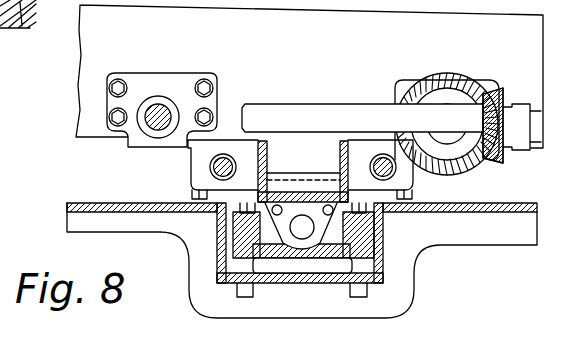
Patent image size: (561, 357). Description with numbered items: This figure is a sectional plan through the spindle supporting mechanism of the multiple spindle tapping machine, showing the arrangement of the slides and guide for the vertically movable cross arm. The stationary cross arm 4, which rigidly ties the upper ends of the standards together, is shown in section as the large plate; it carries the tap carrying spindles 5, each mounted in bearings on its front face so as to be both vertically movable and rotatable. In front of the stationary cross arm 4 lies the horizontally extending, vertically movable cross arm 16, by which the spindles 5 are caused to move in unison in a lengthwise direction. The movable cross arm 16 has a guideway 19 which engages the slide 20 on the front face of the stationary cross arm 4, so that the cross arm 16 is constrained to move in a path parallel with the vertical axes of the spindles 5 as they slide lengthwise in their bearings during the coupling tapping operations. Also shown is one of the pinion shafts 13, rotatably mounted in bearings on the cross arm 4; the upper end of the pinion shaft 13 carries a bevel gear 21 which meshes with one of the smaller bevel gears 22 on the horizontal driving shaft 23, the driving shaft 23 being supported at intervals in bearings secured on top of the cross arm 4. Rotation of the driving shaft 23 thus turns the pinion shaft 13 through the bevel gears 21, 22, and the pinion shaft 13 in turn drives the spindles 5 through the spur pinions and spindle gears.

The cross arm 4 is at (309, 76).
The spindle 5 is at (211, 167).
The pinion shaft 13 is at (158, 103).
The vertically movable cross arm 16 is at (418, 288).
The guideway 19 is at (200, 262).
The slide 20 is at (315, 258).
The bevel gear 21 is at (472, 65).
The smaller bevel gear 22 is at (510, 154).
The horizontal driving shaft 23 is at (362, 124).